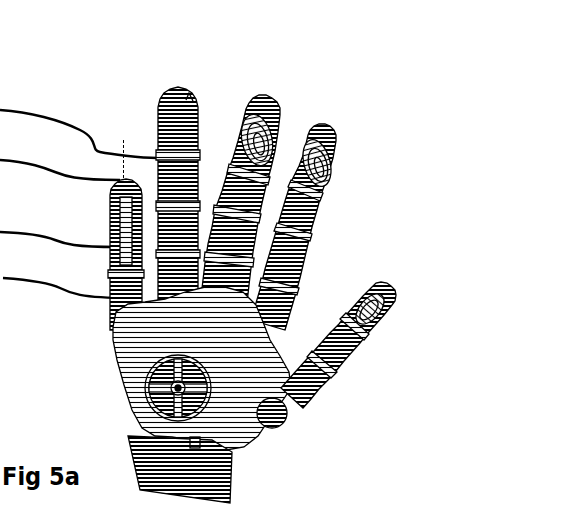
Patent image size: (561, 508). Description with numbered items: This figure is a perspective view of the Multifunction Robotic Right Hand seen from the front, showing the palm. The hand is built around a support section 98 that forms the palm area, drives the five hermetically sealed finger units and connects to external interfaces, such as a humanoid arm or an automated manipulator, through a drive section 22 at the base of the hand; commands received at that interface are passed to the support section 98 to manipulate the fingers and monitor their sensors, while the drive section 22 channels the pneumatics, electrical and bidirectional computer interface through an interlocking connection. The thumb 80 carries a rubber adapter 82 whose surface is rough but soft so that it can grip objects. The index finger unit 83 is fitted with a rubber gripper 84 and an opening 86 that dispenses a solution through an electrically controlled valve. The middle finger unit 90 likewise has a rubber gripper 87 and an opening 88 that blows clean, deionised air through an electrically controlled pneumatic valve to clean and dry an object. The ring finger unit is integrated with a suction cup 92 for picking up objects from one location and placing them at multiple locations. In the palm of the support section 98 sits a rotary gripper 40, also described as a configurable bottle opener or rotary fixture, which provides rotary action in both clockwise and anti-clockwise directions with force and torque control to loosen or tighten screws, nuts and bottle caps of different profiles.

The drive section 22 is at (157, 465).
The rotary gripper 40 is at (213, 380).
The thumb 80 is at (372, 345).
The rubber adapter 82 is at (372, 297).
The index finger unit 83 is at (283, 283).
The rubber gripper 84 is at (322, 170).
The opening 86 is at (346, 210).
The rubber gripper 87 is at (270, 140).
The opening 88 is at (275, 158).
The middle finger unit 90 is at (243, 203).
The suction cup 92 is at (178, 110).
The support section 98 is at (140, 360).